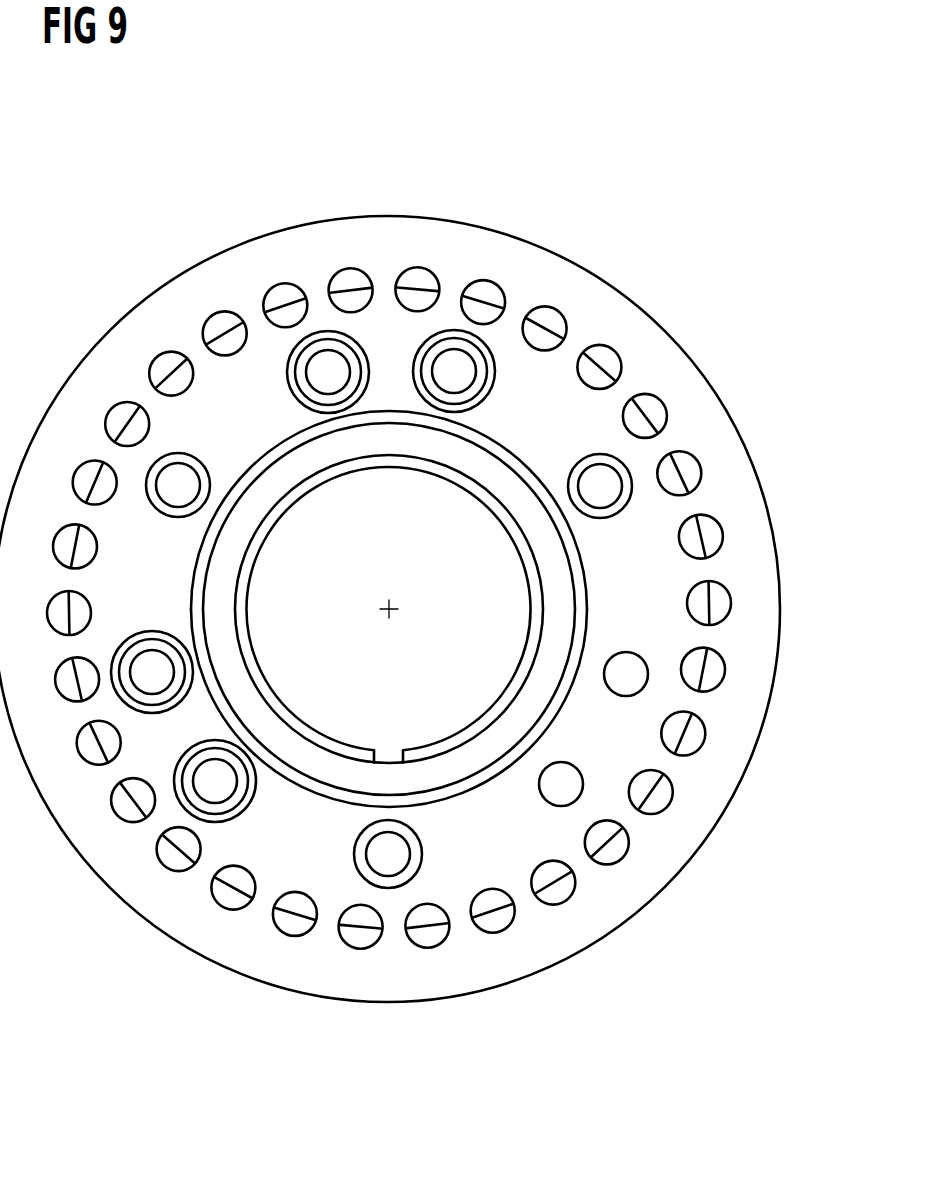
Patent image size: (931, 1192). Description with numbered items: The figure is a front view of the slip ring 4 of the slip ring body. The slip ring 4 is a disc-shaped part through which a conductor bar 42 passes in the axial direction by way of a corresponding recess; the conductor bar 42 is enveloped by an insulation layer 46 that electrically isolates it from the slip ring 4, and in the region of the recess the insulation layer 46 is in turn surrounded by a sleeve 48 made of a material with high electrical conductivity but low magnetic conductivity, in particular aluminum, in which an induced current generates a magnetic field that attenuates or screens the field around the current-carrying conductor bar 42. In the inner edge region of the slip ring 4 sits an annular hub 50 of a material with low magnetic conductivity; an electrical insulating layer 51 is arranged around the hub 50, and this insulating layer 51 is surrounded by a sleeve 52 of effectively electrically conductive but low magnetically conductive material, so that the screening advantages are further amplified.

The slip ring 4 is at (723, 440).
The conductor bar 42 is at (447, 367).
The insulation layer 46 is at (493, 348).
The sleeve 48 is at (418, 362).
The annular hub 50 is at (558, 570).
The insulating layer 51 is at (583, 625).
The sleeve 52 is at (558, 717).